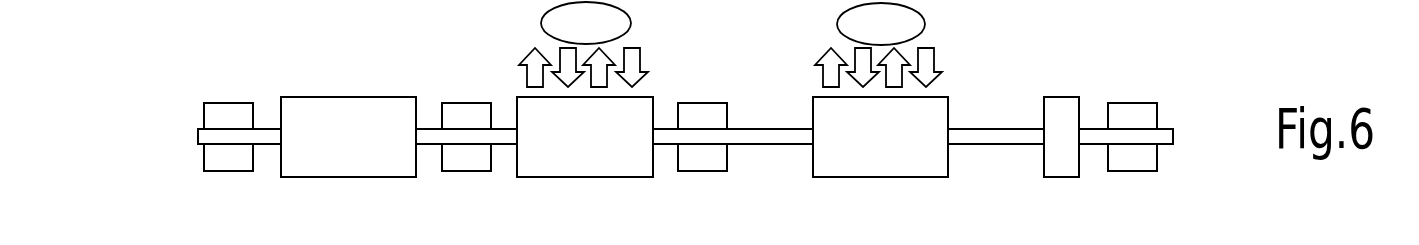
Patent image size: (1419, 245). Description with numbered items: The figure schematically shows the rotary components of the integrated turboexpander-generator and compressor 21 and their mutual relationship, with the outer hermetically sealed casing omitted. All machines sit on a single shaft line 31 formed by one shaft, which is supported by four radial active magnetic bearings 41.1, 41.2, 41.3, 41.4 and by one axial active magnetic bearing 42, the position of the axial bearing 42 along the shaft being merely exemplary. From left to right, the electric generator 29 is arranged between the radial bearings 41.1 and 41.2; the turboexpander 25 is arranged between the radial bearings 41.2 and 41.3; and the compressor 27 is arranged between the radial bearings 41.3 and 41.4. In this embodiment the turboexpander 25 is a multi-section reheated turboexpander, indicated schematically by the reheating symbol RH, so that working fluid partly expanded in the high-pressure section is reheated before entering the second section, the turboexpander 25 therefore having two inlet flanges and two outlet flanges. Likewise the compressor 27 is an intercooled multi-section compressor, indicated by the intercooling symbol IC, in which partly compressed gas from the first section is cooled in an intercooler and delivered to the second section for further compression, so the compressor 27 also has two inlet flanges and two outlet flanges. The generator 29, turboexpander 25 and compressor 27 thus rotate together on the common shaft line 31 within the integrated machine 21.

The integrated turboexpander-generator and compressor 21 is at (1182, 103).
The turboexpander 25 is at (585, 166).
The compressor 27 is at (880, 166).
The electric generator 29 is at (332, 165).
The shaft line 31 is at (766, 144).
The radial active magnetic bearing 41.1 is at (230, 167).
The radial active magnetic bearing 41.2 is at (468, 168).
The radial active magnetic bearing 41.3 is at (704, 168).
The radial active magnetic bearing 41.4 is at (1132, 167).
The axial active magnetic bearing 42 is at (1059, 165).